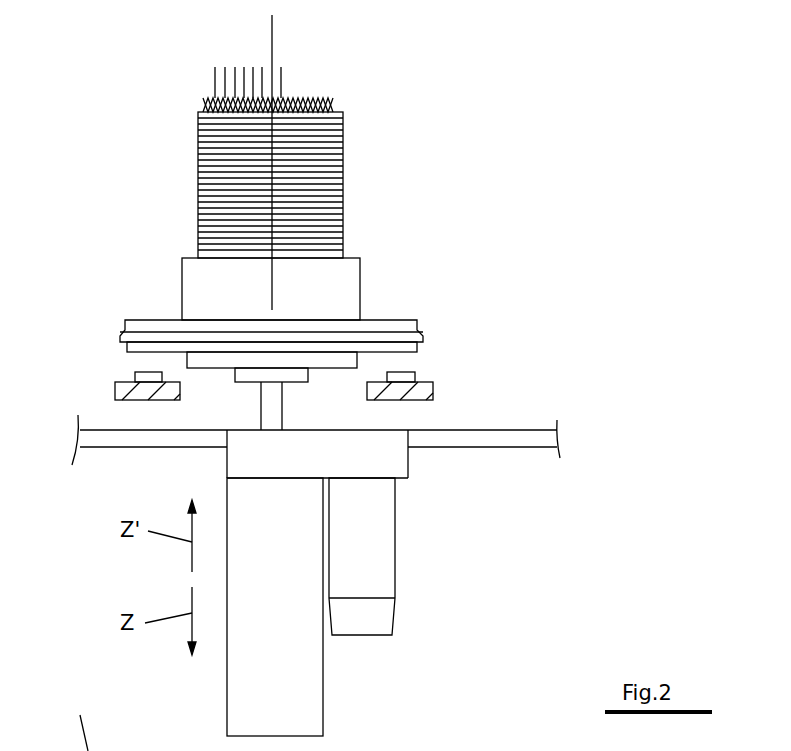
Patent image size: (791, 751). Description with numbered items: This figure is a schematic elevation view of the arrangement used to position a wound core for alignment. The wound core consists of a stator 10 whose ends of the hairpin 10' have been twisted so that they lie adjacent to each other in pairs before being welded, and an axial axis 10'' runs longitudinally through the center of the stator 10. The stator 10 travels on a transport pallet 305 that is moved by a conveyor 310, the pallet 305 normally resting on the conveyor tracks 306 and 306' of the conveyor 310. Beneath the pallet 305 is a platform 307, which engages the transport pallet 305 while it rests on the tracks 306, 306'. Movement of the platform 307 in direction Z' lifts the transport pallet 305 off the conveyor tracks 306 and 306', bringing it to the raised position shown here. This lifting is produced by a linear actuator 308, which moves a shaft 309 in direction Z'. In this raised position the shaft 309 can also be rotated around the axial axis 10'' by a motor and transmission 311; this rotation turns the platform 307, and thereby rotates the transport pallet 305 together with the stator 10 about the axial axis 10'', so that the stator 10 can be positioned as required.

The stator 10 is at (203, 162).
The ends of the hairpin 10' is at (128, 50).
The axial axis 10'' is at (345, 162).
The transport pallet 305 is at (390, 325).
The conveyor track 306 is at (447, 372).
The conveyor track 306' is at (101, 367).
The platform 307 is at (318, 358).
The linear actuator 308 is at (285, 662).
The shaft 309 is at (265, 403).
The conveyor 310 is at (488, 408).
The motor and transmission 311 is at (378, 551).